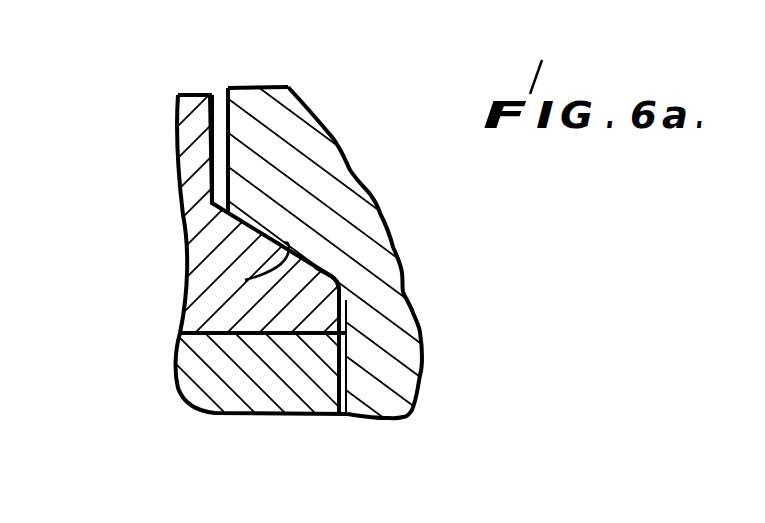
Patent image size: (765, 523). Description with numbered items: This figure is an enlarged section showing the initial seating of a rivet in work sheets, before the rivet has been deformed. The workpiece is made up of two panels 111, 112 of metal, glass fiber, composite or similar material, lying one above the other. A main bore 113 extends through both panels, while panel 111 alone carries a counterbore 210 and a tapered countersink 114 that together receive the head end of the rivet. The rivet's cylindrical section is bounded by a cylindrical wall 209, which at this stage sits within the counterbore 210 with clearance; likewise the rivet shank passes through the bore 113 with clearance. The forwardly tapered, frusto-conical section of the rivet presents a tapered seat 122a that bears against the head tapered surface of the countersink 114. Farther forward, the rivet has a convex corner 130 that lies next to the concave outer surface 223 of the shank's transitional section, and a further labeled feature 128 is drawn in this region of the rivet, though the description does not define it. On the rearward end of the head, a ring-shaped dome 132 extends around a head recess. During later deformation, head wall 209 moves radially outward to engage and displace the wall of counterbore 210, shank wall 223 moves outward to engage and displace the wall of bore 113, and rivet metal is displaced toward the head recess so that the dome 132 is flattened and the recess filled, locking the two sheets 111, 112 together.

The panel 111 is at (197, 232).
The panel 112 is at (188, 372).
The main bore 113 is at (339, 386).
The tapered countersink 114 is at (281, 230).
The tapered seat 122a is at (245, 280).
The gap 128 is at (339, 309).
The convex corner 130 is at (338, 281).
The dome 132 is at (268, 87).
The cylindrical wall 209 is at (225, 144).
The counterbore 210 is at (216, 110).
The concave outer surface 223 is at (346, 353).